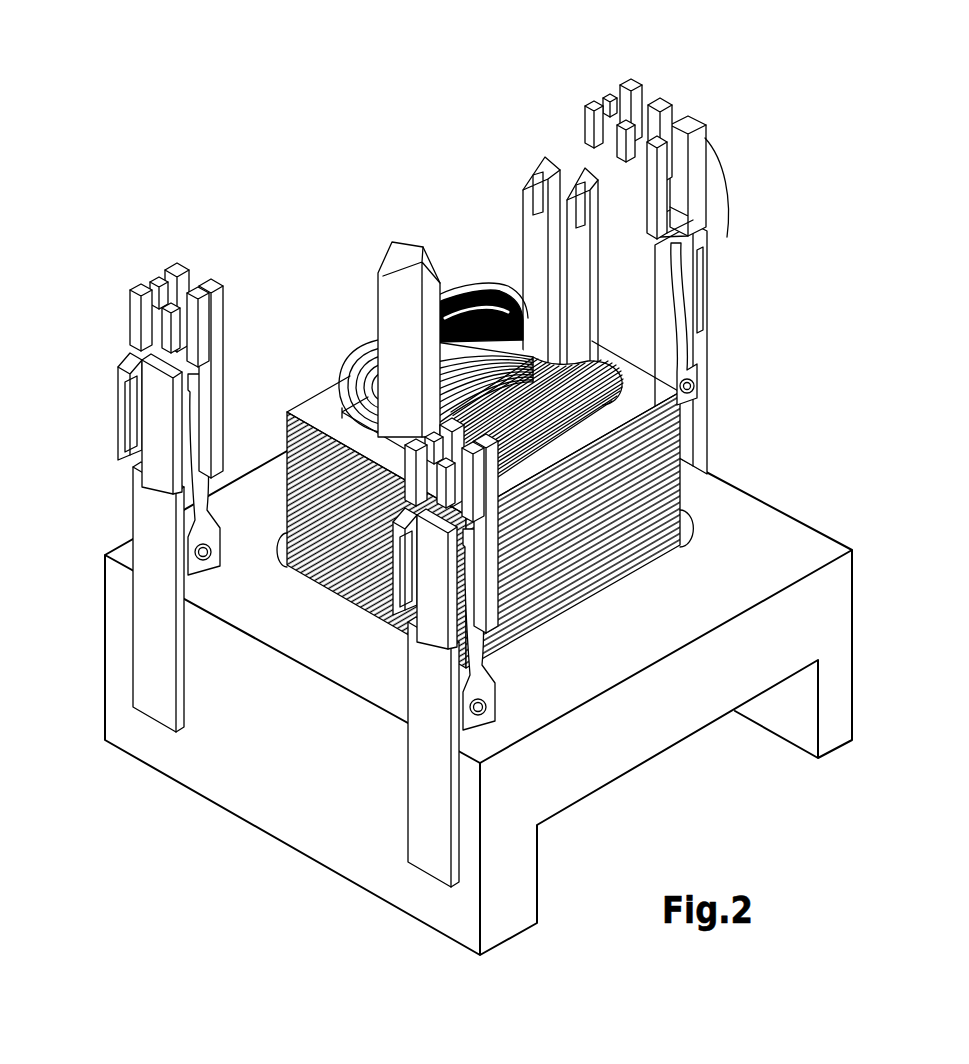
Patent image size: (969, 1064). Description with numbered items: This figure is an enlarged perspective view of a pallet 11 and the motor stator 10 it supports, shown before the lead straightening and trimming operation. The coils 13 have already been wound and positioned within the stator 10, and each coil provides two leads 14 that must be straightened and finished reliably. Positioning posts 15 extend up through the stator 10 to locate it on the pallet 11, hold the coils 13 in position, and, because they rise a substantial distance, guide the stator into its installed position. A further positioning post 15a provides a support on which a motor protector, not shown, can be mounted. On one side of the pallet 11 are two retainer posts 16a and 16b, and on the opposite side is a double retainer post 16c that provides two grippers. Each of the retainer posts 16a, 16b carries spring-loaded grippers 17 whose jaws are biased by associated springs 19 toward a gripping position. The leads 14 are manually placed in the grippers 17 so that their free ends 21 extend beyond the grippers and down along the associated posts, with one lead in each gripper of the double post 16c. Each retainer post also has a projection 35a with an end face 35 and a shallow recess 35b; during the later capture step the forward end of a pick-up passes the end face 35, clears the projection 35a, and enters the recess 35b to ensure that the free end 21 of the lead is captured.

The motor stator 10 is at (625, 418).
The pallet 11 is at (797, 548).
The coils 13 is at (470, 300).
The leads 14 is at (223, 313).
The positioning posts 15 is at (392, 262).
The positioning post 15a is at (532, 232).
The retainer post 16a is at (147, 522).
The retainer post 16b is at (412, 690).
The double retainer post 16c is at (703, 379).
The spring-loaded grippers 17 is at (197, 283).
The springs 19 is at (220, 527).
The free ends 21 is at (128, 458).
The end face 35 is at (143, 330).
The projection 35a is at (178, 352).
The shallow recess 35b is at (142, 427).